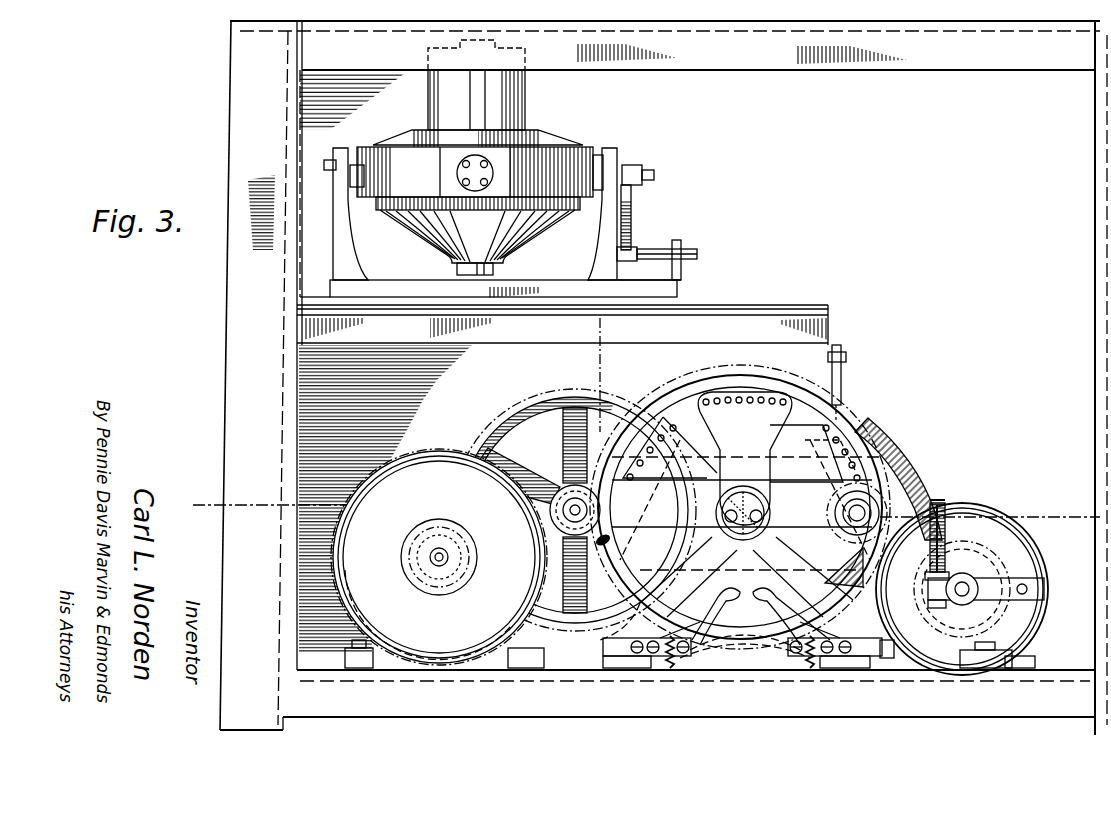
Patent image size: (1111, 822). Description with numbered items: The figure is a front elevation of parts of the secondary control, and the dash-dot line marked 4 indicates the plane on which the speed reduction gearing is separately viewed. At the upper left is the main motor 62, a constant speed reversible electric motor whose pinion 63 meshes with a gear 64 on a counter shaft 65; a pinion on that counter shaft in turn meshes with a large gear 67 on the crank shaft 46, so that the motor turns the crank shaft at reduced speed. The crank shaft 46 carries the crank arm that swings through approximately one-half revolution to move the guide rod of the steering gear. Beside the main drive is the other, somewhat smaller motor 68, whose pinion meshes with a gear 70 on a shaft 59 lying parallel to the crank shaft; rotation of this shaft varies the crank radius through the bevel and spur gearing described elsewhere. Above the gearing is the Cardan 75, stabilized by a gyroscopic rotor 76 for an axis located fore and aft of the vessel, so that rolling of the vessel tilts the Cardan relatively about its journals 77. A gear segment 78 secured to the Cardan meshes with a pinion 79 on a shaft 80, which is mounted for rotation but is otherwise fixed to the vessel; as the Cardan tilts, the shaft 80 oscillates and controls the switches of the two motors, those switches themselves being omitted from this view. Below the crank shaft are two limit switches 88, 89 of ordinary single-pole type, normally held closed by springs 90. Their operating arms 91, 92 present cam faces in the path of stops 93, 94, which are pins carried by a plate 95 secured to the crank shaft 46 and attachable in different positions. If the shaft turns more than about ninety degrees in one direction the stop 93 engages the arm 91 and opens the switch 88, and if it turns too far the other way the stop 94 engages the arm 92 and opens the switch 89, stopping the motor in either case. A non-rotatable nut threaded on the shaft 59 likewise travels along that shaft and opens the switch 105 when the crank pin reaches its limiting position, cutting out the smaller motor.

The axis center line 4 is at (193, 516).
The crank shaft 46 is at (743, 496).
The shaft 59 is at (865, 513).
The main motor 62 is at (439, 557).
The pinion 63 is at (420, 556).
The gear 64 is at (518, 397).
The counter shaft 65 is at (568, 498).
The gear 67 is at (692, 380).
The motor 68 is at (988, 530).
The gear 70 is at (905, 462).
The Cardan 75 is at (585, 148).
The gyroscopic rotor 76 is at (522, 94).
The journals 77 is at (330, 166).
The gear segment 78 is at (632, 212).
The pinion 79 is at (632, 252).
The shaft 80 is at (690, 250).
The switch 88 is at (620, 648).
The switch 89 is at (870, 648).
The springs 90 is at (673, 655).
The operating arm 91 is at (761, 616).
The operating arm 92 is at (772, 615).
The stop 93 is at (746, 505).
The stop 94 is at (852, 470).
The plate 95 is at (816, 450).
The switch 105 is at (845, 372).